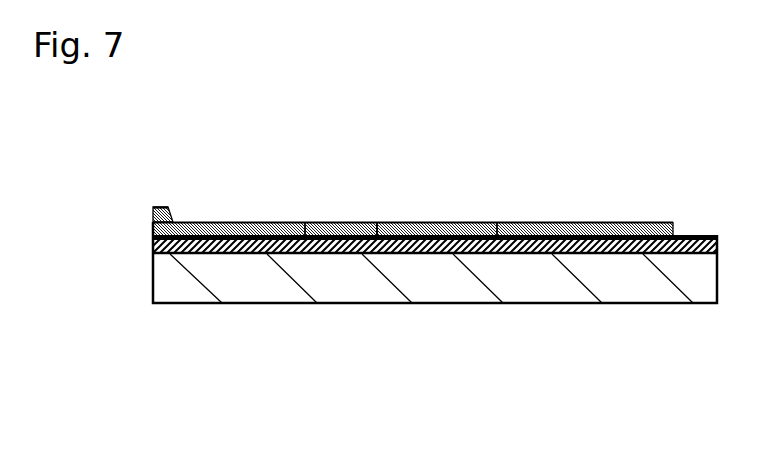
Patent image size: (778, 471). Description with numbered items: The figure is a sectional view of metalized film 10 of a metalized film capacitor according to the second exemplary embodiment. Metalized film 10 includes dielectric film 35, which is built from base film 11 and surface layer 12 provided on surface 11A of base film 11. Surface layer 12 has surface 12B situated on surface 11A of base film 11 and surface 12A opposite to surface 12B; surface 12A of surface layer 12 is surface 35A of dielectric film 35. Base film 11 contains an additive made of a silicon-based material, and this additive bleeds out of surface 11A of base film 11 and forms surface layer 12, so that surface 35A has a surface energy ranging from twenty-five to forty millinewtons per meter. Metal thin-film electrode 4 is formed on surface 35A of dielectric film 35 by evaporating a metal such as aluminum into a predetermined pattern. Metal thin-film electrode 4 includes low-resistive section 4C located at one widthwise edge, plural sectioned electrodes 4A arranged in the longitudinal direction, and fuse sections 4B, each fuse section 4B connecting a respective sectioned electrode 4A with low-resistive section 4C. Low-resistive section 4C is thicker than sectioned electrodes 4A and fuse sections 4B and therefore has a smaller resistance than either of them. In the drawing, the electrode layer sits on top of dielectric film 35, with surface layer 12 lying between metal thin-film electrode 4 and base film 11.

The metal thin-film electrode 4 is at (579, 222).
The sectioned electrode 4A is at (450, 222).
The fuse section 4B is at (193, 223).
The low-resistive section 4C is at (167, 212).
The metalized film capacitor 10 is at (657, 192).
The base film 11 is at (261, 288).
The surface of base film 11A is at (381, 222).
The surface layer 12 is at (183, 237).
The surface of surface layer 12A is at (497, 221).
The surface of surface layer 12B is at (472, 252).
The dielectric film 35 is at (435, 332).
The surface of dielectric film 35A is at (305, 223).